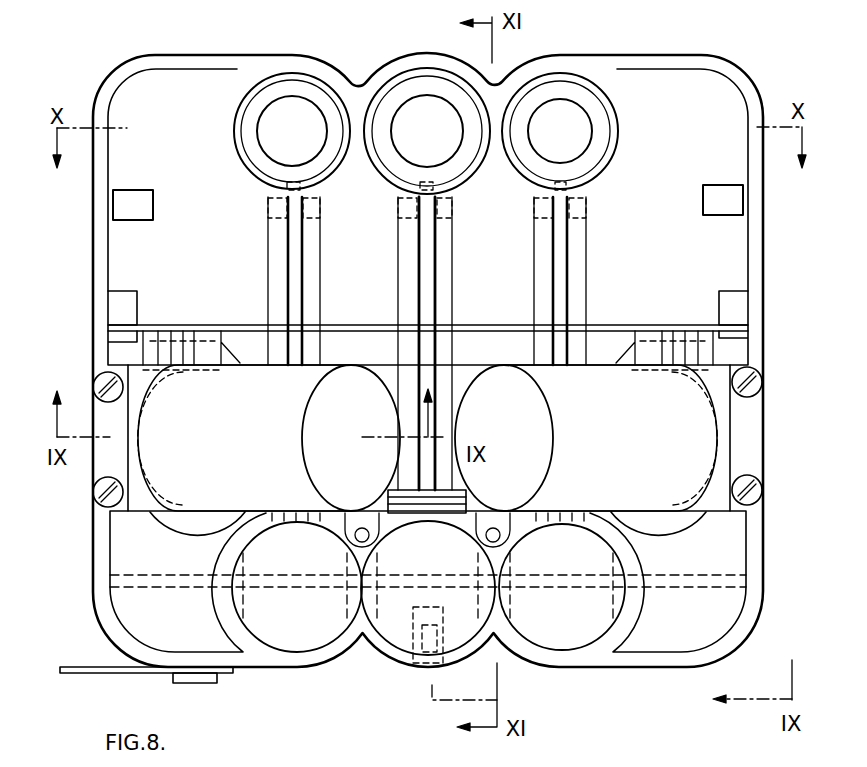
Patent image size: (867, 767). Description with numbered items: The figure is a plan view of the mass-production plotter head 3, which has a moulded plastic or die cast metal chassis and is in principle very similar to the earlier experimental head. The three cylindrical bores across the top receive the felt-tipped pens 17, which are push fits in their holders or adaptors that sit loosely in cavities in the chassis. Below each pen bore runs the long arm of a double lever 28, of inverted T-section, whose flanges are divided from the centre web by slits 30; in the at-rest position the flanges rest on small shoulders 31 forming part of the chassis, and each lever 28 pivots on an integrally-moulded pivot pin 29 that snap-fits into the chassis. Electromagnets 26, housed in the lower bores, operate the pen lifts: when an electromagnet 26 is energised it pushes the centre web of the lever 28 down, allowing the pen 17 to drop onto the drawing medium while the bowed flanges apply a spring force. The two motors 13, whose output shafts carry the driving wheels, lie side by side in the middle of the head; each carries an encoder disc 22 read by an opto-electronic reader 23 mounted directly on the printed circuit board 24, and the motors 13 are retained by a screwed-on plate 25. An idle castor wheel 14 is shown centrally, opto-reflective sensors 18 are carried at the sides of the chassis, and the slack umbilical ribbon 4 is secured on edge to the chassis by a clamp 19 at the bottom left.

The plotter head 3 is at (368, 63).
The slack umbilical ribbon 4 is at (96, 673).
The motor 13 is at (333, 380).
The castor wheel 14 is at (402, 622).
The felt-tipped pen 17 is at (281, 110).
The opto-reflective sensor 18 is at (123, 202).
The clamp 19 is at (196, 684).
The encoder disc 22 is at (193, 520).
The opto-electronic reader 23 is at (153, 348).
The printed circuit board 24 is at (120, 327).
The screwed-on plate 25 is at (110, 456).
The electromagnet 26 is at (305, 635).
The double lever 28 is at (288, 290).
The pivot pin 29 is at (398, 500).
The slit 30 is at (418, 275).
The shoulder 31 is at (267, 210).